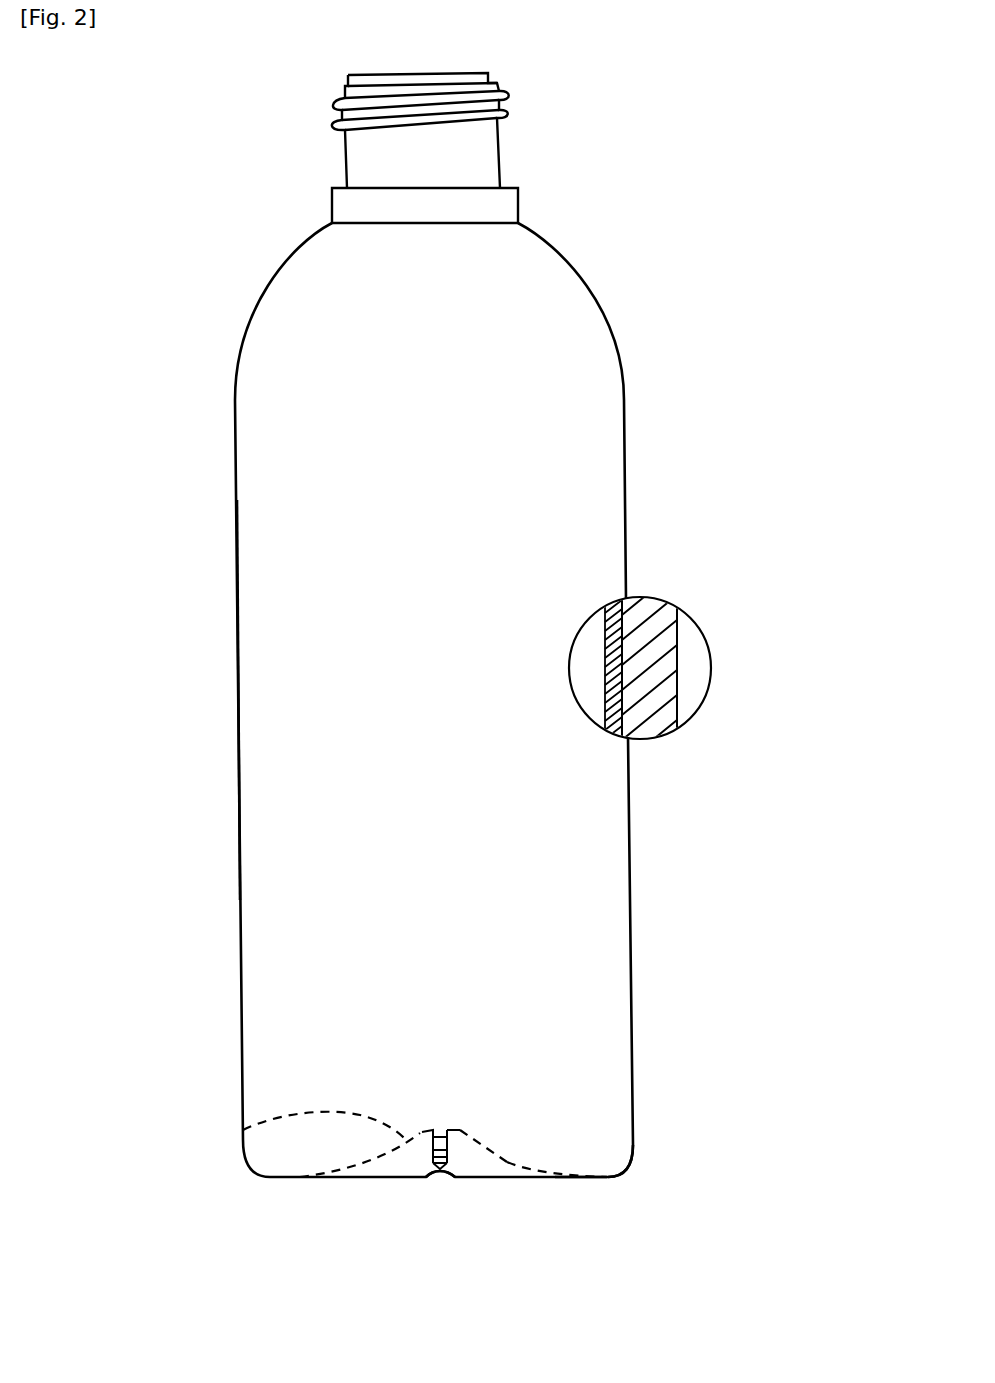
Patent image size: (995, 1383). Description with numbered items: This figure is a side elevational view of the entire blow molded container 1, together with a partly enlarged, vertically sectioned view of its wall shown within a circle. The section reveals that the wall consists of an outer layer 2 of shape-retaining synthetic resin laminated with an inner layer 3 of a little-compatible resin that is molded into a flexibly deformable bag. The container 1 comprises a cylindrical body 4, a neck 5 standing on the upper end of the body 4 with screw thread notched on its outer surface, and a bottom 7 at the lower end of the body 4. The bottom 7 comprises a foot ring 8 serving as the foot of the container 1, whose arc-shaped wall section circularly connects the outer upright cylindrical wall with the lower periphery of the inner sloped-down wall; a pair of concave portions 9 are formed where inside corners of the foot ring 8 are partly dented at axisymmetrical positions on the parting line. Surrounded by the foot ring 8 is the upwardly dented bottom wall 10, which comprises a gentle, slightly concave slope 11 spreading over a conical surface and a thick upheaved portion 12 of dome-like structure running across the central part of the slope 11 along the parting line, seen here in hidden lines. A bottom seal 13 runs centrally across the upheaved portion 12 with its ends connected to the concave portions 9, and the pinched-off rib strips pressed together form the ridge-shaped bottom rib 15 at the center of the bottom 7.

The container 1 is at (636, 336).
The outer layer 2 is at (660, 615).
The inner layer 3 is at (610, 707).
The body 4 is at (262, 532).
The neck 5 is at (483, 162).
The bottom 7 is at (326, 1190).
The foot ring 8 is at (613, 1177).
The concave portions 9 is at (428, 1177).
The bottom wall 10 is at (504, 1165).
The slope 11 is at (553, 1168).
The upheaved portion 12 is at (243, 1130).
The bottom seal 13 is at (449, 1196).
The bottom rib 15 is at (413, 1172).